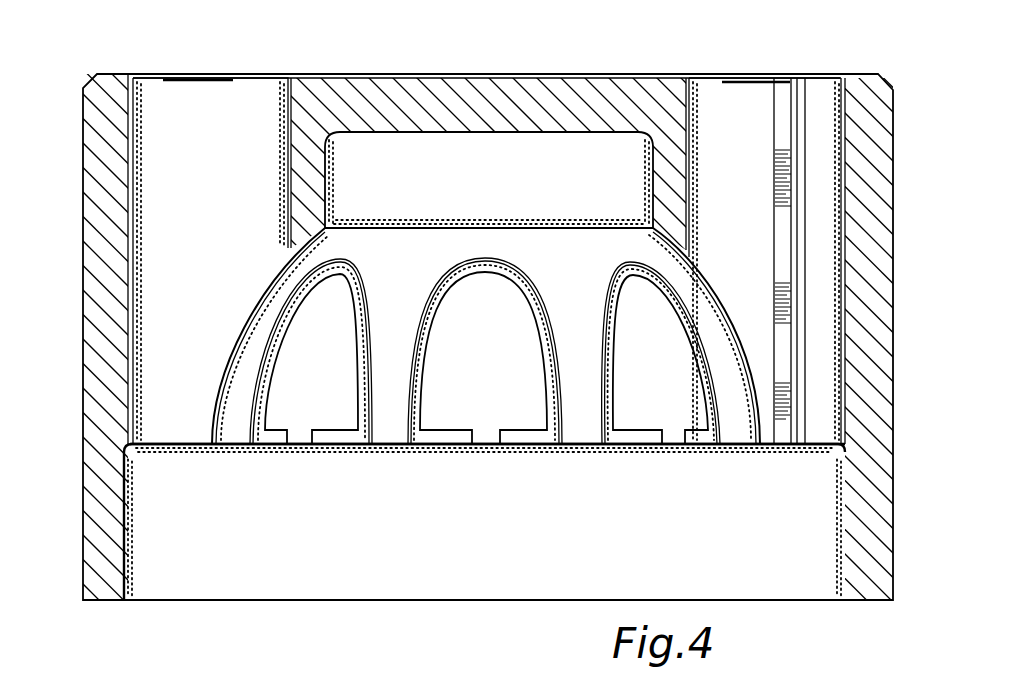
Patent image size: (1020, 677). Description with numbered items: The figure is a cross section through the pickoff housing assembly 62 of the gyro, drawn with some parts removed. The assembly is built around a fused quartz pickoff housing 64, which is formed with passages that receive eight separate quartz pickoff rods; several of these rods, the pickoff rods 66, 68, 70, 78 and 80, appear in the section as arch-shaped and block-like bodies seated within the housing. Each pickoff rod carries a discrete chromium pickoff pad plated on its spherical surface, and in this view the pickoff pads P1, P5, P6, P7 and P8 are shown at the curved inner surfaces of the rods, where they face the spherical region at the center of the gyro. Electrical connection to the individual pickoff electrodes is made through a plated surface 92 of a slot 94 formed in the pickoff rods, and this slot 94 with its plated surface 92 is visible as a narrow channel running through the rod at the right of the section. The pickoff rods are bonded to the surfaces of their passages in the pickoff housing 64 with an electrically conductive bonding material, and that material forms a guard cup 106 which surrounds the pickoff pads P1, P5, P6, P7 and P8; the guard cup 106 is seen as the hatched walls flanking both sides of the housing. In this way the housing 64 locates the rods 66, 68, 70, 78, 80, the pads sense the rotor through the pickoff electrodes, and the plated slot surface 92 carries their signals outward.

The pickoff housing assembly 62 is at (368, 97).
The pickoff housing 64 is at (453, 93).
The pickoff rod 66 is at (520, 292).
The pickoff rod 68 is at (610, 335).
The pickoff rod 70 is at (741, 103).
The pickoff rod 78 is at (262, 98).
The pickoff rod 80 is at (360, 285).
The plated surface 92 is at (782, 183).
The slot 94 is at (796, 136).
The guard cup 106 is at (128, 162).
The pickoff pad P1 is at (718, 303).
The pickoff pad P5 is at (243, 318).
The pickoff pad P6 is at (285, 418).
The pickoff pad P7 is at (448, 420).
The pickoff pad P8 is at (647, 423).